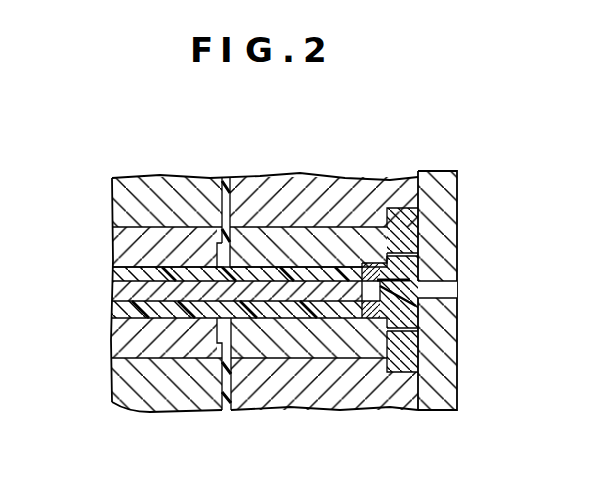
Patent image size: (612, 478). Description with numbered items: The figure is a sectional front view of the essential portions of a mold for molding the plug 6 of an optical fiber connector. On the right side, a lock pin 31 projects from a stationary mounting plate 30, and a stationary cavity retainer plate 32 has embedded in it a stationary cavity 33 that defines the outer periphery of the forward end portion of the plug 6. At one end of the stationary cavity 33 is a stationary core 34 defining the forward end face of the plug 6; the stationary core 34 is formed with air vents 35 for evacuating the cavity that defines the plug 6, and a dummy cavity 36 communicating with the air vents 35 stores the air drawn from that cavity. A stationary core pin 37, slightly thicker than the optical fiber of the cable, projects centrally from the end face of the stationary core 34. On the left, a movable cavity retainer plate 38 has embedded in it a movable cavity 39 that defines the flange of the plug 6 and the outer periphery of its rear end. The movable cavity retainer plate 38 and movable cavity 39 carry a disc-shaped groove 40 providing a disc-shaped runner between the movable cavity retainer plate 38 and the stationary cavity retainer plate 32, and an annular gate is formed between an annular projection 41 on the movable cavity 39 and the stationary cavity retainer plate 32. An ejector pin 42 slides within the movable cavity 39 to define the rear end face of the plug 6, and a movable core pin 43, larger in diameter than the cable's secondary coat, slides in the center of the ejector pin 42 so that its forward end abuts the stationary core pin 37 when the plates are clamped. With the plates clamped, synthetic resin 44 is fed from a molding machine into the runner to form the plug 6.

The plug 6 is at (273, 307).
The stationary mounting plate 30 is at (450, 200).
The lock pin 31 is at (457, 289).
The stationary cavity retainer plate 32 is at (298, 180).
The stationary cavity 33 is at (325, 229).
The stationary core 34 is at (418, 265).
The air vents 35 is at (372, 268).
The dummy cavity 36 is at (418, 302).
The stationary core pin 37 is at (342, 308).
The movable cavity retainer plate 38 is at (146, 190).
The movable cavity 39 is at (125, 255).
The groove 40 is at (229, 178).
The annular projection 41 is at (225, 237).
The ejector pin 42 is at (123, 275).
The movable core pin 43 is at (116, 295).
The synthetic resin 44 is at (228, 412).